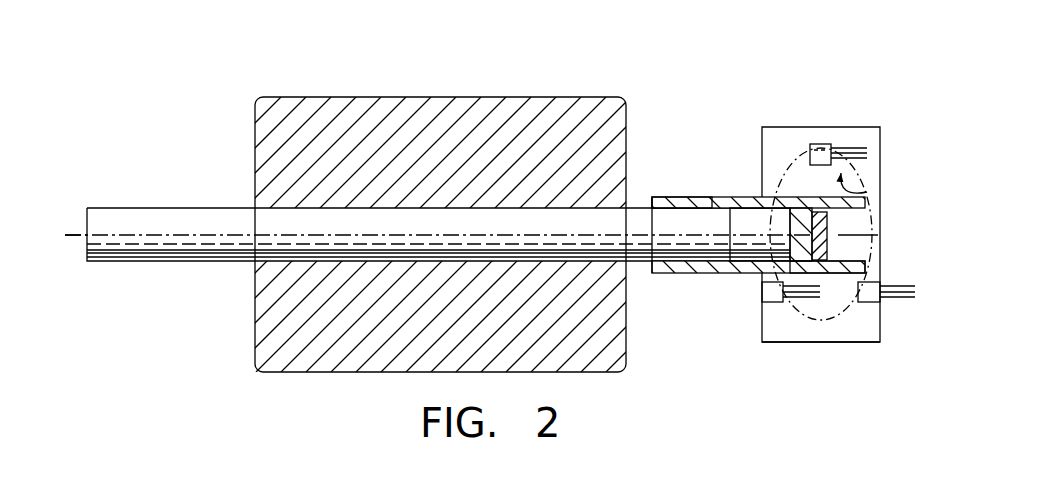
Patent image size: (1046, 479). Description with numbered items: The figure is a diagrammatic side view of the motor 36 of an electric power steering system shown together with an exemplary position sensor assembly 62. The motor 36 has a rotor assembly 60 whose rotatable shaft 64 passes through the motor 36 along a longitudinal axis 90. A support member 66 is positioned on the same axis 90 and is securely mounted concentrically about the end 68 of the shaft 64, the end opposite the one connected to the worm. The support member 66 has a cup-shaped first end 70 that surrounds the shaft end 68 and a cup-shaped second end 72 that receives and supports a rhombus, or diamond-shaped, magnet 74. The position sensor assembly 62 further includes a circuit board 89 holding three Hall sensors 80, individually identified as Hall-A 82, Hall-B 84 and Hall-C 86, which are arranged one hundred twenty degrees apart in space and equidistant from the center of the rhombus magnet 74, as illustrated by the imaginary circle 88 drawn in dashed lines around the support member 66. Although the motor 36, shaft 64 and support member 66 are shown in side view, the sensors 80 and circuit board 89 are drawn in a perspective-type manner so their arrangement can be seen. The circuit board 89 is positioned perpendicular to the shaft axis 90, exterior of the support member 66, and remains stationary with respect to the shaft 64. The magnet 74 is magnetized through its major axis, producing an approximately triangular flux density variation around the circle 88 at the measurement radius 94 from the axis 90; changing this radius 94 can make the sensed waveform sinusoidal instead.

The motor 36 is at (317, 97).
The rotor assembly 60 is at (697, 336).
The position sensor assembly 62 is at (880, 145).
The rotatable shaft 64 is at (230, 215).
The support member 66 is at (702, 197).
The end of the shaft 68 is at (763, 227).
The first end of the support member 70 is at (672, 208).
The second end of the support member 72 is at (858, 265).
The rhombus magnet 74 is at (830, 227).
The Hall sensors 80 is at (872, 356).
The Hall-A 82 is at (820, 144).
The Hall-B 84 is at (873, 295).
The Hall-C 86 is at (772, 293).
The imaginary circle 88 is at (803, 318).
The circuit board 89 is at (837, 343).
The longitudinal axis 90 is at (82, 235).
The measurement radius 94 is at (876, 178).